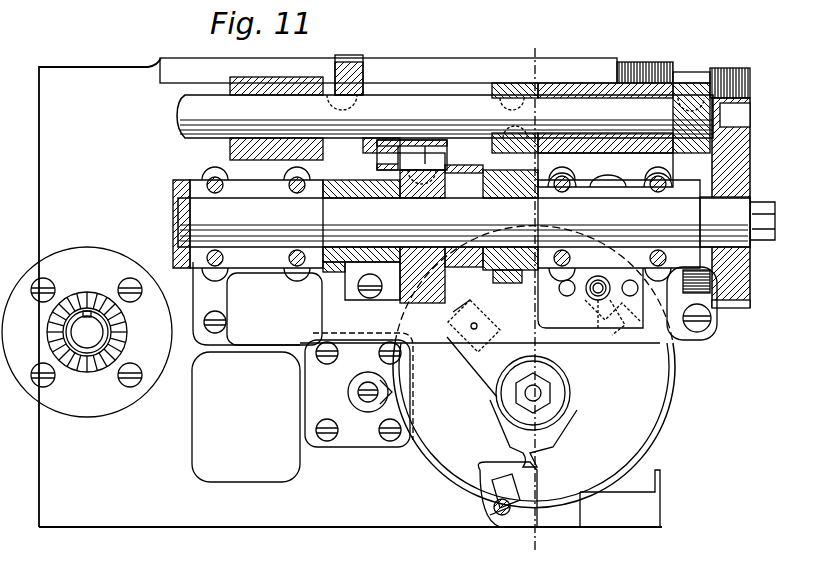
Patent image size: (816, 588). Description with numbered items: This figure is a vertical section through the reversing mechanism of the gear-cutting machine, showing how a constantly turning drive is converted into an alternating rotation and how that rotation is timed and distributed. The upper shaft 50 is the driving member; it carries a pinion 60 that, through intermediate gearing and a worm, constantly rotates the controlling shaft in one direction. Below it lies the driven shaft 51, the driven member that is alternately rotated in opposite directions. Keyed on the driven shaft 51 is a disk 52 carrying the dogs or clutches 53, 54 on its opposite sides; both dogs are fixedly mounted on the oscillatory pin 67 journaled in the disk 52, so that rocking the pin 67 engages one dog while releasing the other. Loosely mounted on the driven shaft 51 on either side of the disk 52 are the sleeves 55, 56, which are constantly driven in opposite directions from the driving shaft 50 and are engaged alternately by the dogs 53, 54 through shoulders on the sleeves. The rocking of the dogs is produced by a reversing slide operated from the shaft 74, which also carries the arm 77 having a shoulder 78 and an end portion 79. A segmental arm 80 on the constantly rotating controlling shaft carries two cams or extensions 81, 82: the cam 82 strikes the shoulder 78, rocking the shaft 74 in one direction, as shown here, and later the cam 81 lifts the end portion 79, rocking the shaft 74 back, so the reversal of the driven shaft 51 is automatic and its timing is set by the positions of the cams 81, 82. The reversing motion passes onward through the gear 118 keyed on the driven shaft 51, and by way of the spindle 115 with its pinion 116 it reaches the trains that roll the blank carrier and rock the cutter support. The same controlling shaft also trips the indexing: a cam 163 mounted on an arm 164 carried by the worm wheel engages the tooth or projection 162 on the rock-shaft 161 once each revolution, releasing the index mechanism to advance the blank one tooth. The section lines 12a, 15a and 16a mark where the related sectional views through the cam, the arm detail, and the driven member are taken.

The section line 12a— 12a is at (532, 301).
The section line 15a— 15a is at (597, 276).
The section line 16a— 16a is at (453, 320).
The shaft 50 is at (380, 132).
The driven shaft 51 is at (461, 224).
The disk 52 is at (413, 283).
The dog or clutch 53 is at (465, 95).
The dog or clutch 54 is at (388, 140).
The sleeve 55 is at (504, 194).
The sleeve 56 is at (377, 197).
The pinion 60 is at (693, 98).
The oscillatory pin 67 is at (412, 155).
The shaft 74 is at (599, 286).
The arm 77 is at (601, 298).
The shoulder 78 is at (548, 304).
The end portion 79 is at (613, 336).
The segmental arm 80 is at (482, 370).
The cam or extension 81 is at (447, 322).
The cam or extension 82 is at (590, 312).
The spindle 115 is at (110, 333).
The pinion 116 is at (98, 372).
The gear 118 is at (727, 300).
The rock-shaft 161 is at (364, 406).
The tooth or projection 162 is at (392, 442).
The cam 163 is at (495, 530).
The arm 164 is at (537, 490).